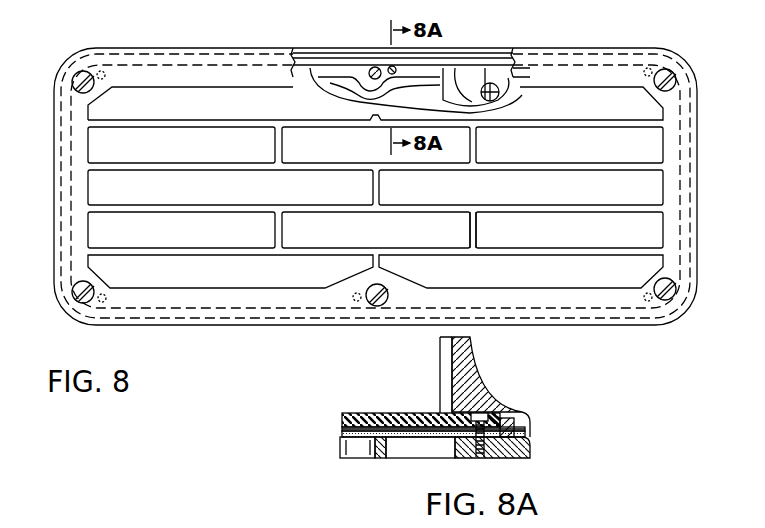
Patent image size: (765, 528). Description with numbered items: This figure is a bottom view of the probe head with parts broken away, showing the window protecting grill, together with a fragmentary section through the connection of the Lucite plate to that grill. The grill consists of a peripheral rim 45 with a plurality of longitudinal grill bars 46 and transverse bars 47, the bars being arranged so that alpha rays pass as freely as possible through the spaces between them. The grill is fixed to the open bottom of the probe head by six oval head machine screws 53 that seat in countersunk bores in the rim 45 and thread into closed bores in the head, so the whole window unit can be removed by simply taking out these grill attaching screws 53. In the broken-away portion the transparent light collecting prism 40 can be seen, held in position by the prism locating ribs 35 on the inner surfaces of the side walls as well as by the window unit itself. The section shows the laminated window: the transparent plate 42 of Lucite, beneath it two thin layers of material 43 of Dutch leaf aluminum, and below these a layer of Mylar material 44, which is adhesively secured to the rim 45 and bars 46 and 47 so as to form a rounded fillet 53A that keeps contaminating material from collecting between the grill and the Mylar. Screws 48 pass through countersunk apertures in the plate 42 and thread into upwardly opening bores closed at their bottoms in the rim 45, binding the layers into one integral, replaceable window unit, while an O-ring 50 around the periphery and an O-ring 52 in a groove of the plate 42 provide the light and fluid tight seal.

In FIG. 8, the prism locating ribs 35 is at (500, 92).
In FIG. 8A, the prism locating ribs 35 is at (443, 374).
In FIG. 8, the light collecting prism 40 is at (470, 80).
In FIG. 8A, the transparent plate 42 is at (383, 413).
In FIG. 8A, the thin layers of material 43 is at (342, 428).
In FIG. 8A, the layer of Mylar material 44 is at (342, 434).
In FIG. 8A, the peripheral rim 45 is at (530, 457).
In FIG. 8, the longitudinal grill bars 46 is at (538, 212).
In FIG. 8A, the longitudinal grill bars 46 is at (386, 456).
In FIG. 8, the transverse bars 47 is at (476, 140).
In FIG. 8, the screws 48 is at (391, 66).
In FIG. 8A, the screws 48 is at (484, 450).
In FIG. 8A, the O-ring 50 is at (507, 423).
In FIG. 8A, the O-ring 52 is at (420, 447).
In FIG. 8, the oval head machine screws 53 is at (80, 289).
In FIG. 8A, the rounded fillet 53A is at (375, 440).